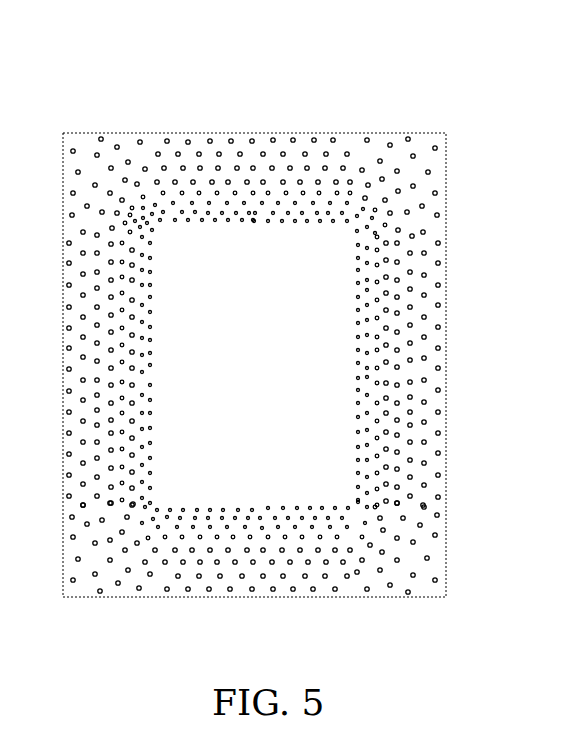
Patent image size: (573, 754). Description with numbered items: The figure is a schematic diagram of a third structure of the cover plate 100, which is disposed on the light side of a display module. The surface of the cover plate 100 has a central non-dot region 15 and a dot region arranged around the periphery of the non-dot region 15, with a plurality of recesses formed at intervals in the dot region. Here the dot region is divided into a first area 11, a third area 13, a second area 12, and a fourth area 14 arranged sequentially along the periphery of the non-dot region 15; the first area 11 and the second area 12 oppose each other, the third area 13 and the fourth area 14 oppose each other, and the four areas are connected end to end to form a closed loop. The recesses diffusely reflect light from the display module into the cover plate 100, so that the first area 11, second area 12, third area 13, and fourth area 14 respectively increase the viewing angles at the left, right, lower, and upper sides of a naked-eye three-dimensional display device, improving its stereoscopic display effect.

The cover plate 100 is at (286, 37).
The first area 11 is at (260, 140).
The second area 12 is at (237, 597).
The third area 13 is at (63, 358).
The fourth area 14 is at (437, 357).
The non-dot region 15 is at (270, 320).